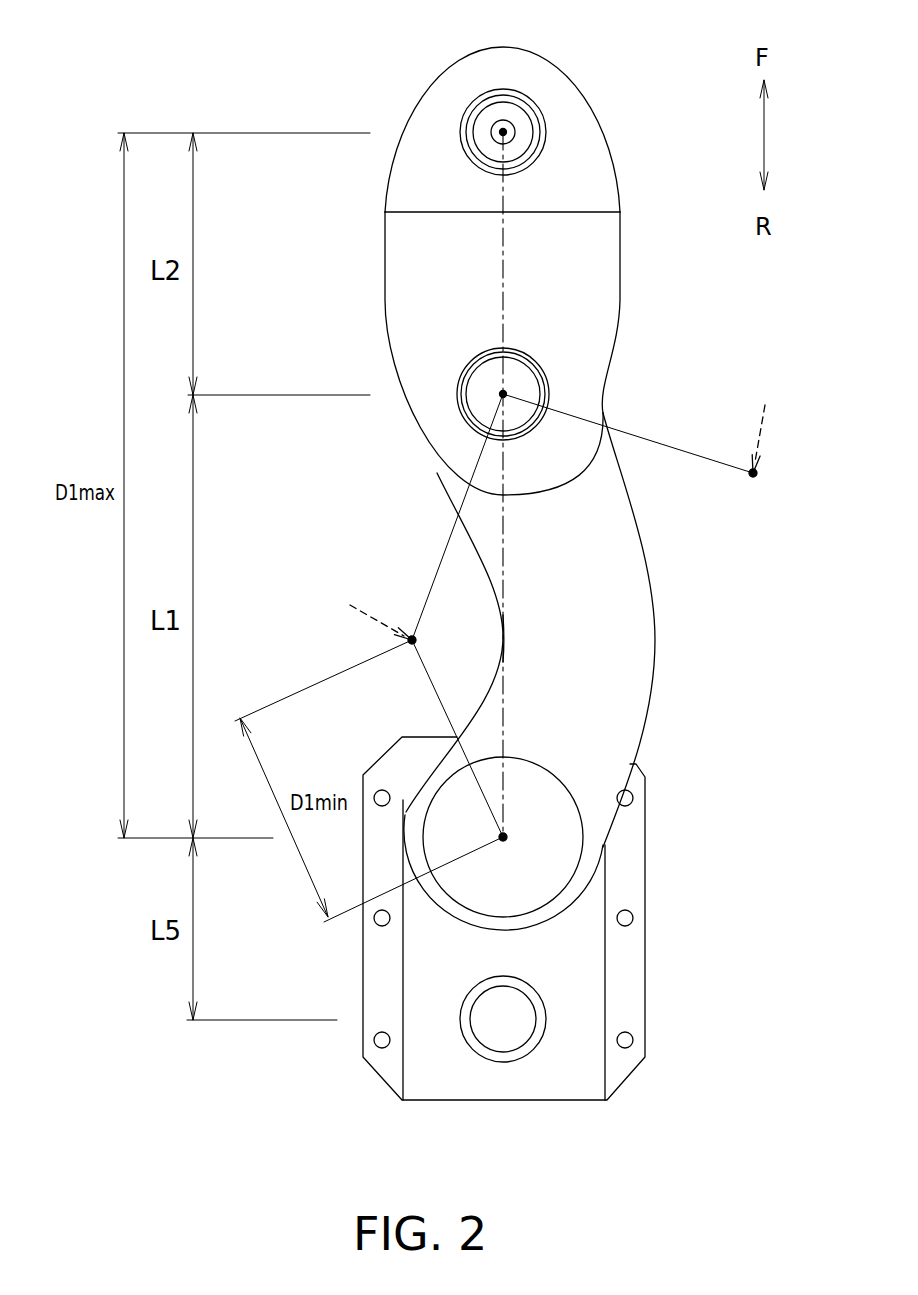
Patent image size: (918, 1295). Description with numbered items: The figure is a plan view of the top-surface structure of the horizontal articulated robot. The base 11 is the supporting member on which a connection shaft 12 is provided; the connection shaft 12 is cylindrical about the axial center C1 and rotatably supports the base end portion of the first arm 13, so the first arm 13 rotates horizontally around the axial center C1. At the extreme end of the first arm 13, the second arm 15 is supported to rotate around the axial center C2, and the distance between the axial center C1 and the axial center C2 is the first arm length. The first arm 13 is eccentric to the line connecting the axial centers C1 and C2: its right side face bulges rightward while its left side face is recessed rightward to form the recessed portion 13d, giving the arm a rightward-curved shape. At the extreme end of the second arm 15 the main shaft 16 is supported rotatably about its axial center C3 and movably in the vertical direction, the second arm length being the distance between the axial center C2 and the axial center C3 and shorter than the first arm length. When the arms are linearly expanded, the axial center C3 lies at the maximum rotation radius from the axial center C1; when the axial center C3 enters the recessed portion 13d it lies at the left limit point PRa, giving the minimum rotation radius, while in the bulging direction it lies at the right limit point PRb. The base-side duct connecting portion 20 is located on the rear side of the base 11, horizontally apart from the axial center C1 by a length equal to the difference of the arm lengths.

The base 11 is at (598, 1000).
The connection shaft 12 is at (553, 887).
The first arm 13 is at (650, 683).
The recessed portion 13d is at (503, 640).
The second arm 15 is at (597, 258).
The main shaft 16 is at (513, 108).
The base-side duct connecting portion 20 is at (513, 1062).
The axial center C1 is at (503, 837).
The axial center C2 is at (503, 394).
The axial center C3 is at (508, 131).
The left limit point PRa is at (412, 640).
The right limit point PRb is at (753, 473).